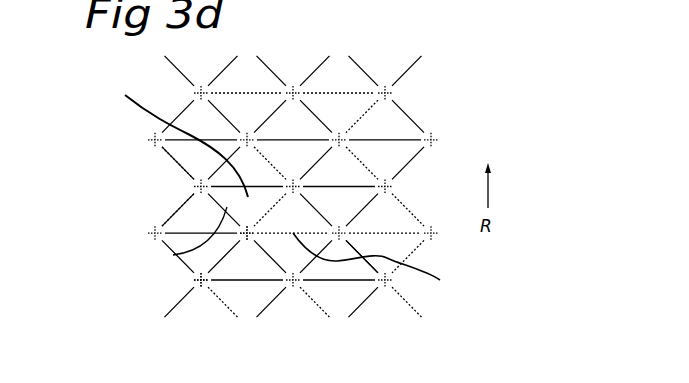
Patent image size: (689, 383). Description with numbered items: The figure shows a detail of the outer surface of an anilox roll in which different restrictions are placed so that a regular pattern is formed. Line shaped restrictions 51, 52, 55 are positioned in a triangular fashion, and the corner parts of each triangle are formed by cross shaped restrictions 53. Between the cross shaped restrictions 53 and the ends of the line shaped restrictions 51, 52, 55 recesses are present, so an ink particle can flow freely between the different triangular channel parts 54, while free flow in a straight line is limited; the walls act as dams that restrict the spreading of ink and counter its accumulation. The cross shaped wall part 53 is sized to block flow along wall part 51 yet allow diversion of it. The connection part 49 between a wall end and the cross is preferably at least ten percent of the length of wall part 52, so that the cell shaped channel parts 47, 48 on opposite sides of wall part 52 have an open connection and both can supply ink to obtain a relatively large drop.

The cell shaped channel part 47 is at (194, 208).
The cell shaped channel part 48 is at (175, 136).
The connection part 49 is at (245, 265).
The line shaped restriction 51 is at (177, 167).
The line shaped restriction 52 is at (173, 212).
The cross shaped restriction 53 is at (195, 282).
The triangular channel part 54 is at (337, 293).
The line shaped restriction 55 is at (381, 264).